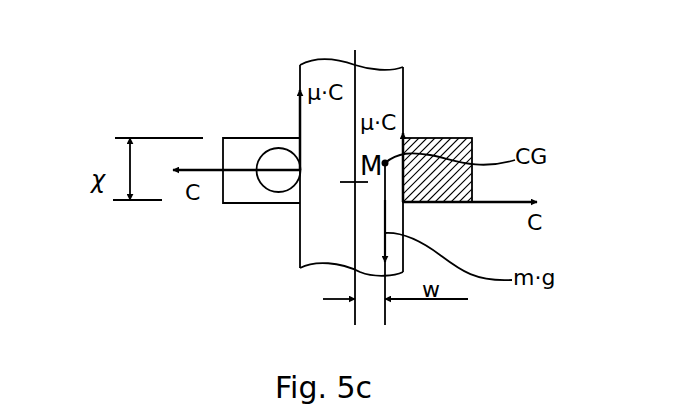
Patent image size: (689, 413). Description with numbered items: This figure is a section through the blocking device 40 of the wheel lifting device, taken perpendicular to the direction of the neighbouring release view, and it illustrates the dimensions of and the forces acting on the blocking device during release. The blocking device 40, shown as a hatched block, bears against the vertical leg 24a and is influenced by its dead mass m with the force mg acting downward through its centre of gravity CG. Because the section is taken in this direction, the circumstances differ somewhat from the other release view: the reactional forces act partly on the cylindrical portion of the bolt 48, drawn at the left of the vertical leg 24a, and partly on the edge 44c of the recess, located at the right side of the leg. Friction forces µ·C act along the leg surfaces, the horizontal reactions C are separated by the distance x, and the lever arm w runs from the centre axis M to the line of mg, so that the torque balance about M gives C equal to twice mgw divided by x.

The bolt 48 is at (265, 150).
The vertical leg 24a is at (405, 80).
The blocking device 40 is at (450, 138).
The edge of the recess 44c is at (404, 177).